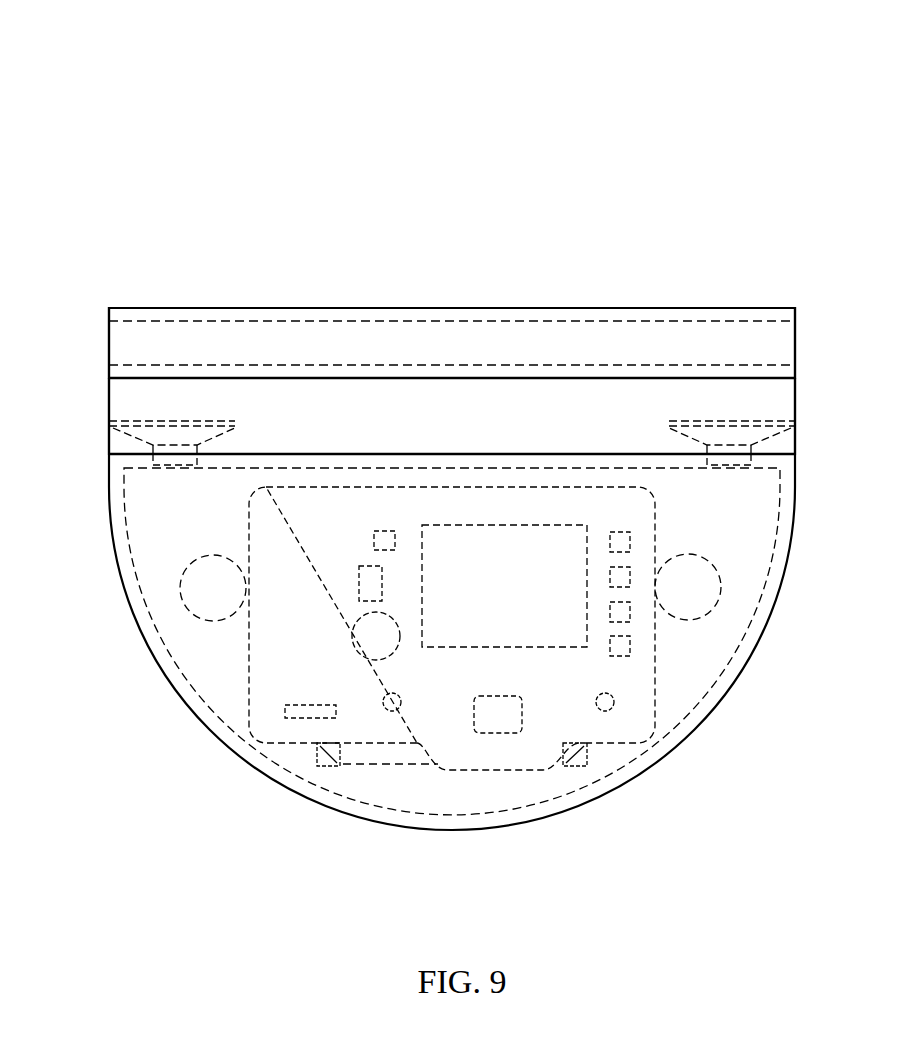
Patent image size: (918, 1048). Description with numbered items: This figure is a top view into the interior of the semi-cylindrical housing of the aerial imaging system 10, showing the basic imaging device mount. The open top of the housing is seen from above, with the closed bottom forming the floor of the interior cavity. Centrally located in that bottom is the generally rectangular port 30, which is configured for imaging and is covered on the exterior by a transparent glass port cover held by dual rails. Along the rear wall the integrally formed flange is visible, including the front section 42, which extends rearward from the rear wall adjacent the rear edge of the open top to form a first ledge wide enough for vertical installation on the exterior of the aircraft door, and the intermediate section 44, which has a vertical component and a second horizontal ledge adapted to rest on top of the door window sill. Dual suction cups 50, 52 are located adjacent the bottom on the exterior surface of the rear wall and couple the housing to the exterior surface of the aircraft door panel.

The aerial imaging system 10 is at (670, 152).
The port 30 is at (378, 764).
The front section 42 is at (118, 392).
The intermediate section 44 is at (130, 365).
The suction cup 50 is at (135, 437).
The suction cup 52 is at (767, 420).